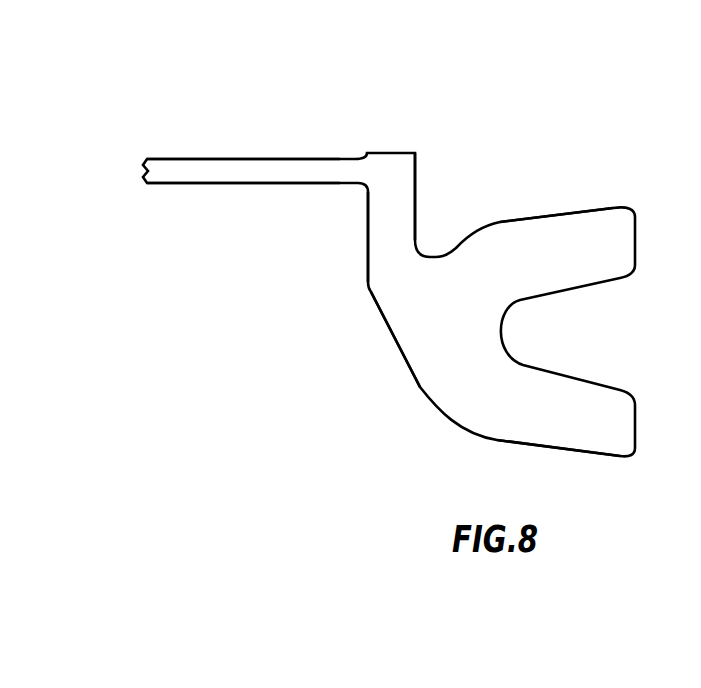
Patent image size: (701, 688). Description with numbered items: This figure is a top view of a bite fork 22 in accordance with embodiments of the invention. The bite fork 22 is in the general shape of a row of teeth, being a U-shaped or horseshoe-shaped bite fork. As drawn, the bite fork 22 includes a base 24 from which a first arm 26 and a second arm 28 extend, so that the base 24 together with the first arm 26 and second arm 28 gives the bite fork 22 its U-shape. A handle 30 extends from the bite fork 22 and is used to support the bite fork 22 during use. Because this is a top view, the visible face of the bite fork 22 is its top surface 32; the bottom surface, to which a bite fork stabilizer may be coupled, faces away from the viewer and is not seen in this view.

The bite fork 22 is at (598, 194).
The base 24 is at (368, 232).
The first arm 26 is at (578, 452).
The second arm 28 is at (543, 217).
The handle 30 is at (167, 158).
The top surface 32 is at (420, 322).